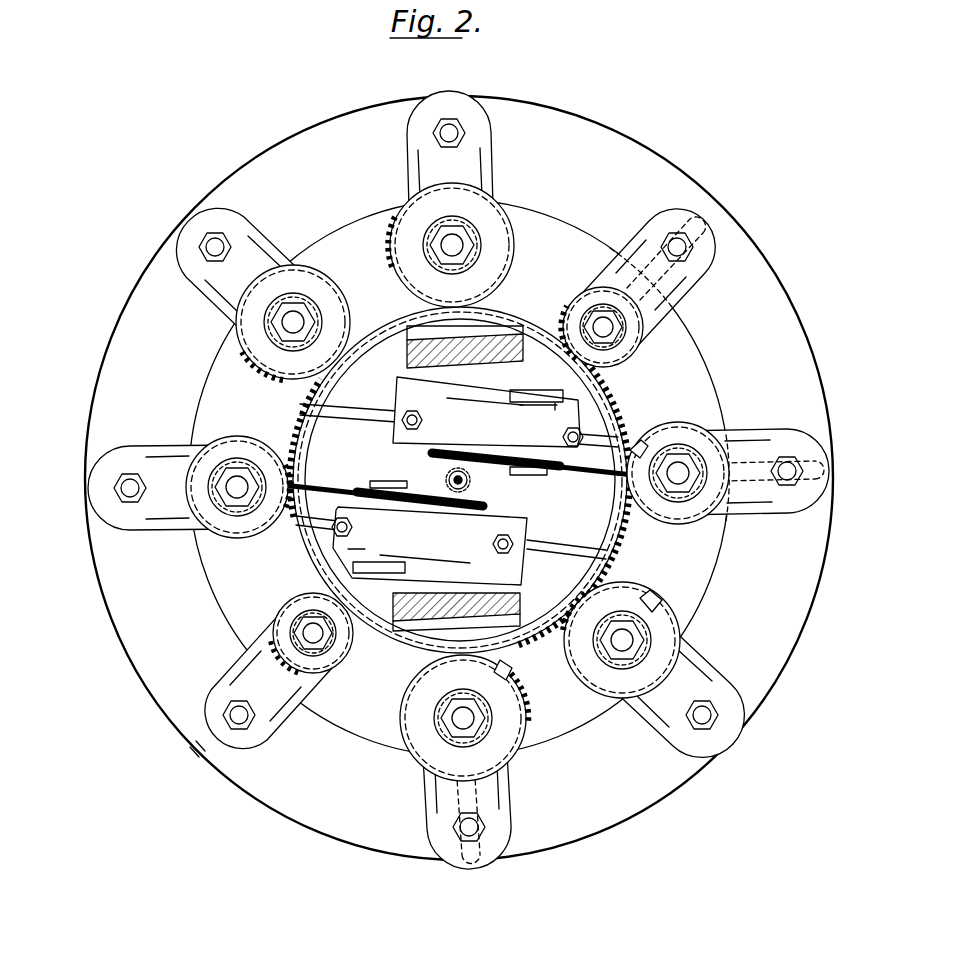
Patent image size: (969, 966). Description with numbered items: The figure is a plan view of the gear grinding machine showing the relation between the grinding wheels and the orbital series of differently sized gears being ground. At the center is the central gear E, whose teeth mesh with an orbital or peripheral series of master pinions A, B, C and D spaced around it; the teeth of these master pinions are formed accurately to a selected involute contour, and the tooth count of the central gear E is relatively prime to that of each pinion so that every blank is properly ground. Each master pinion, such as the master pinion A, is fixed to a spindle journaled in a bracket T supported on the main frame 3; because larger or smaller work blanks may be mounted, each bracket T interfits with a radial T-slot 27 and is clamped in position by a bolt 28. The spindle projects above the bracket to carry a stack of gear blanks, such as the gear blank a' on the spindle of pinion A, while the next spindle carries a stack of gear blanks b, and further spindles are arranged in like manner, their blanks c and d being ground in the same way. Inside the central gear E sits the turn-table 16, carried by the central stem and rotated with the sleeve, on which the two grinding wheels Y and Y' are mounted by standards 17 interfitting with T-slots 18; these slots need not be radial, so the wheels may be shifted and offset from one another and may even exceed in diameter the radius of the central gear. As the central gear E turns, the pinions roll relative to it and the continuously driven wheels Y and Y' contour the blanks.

The main frame 3 is at (788, 652).
The turn-table 16 is at (435, 478).
The standards 17 is at (457, 481).
The T-slots 18 is at (350, 412).
The radial T-slot 27 is at (480, 798).
The bolt 28 is at (698, 720).
The master pinion A is at (648, 428).
The gear blank a' is at (660, 432).
The master pinion B is at (655, 591).
The gear blank b is at (624, 588).
The master pinion C is at (512, 683).
The notch of pinion C c is at (504, 665).
The master pinion D is at (277, 642).
The teeth of pinion D d is at (291, 661).
The central gear E is at (612, 391).
The bracket T is at (688, 518).
The grinding wheel Y is at (532, 486).
The grinding wheel Y' is at (383, 477).